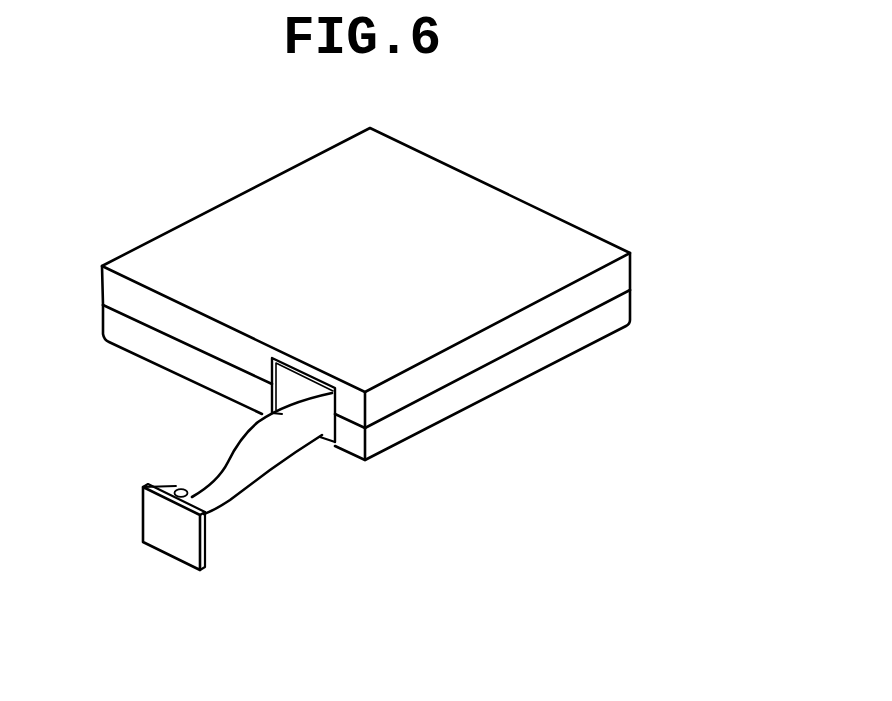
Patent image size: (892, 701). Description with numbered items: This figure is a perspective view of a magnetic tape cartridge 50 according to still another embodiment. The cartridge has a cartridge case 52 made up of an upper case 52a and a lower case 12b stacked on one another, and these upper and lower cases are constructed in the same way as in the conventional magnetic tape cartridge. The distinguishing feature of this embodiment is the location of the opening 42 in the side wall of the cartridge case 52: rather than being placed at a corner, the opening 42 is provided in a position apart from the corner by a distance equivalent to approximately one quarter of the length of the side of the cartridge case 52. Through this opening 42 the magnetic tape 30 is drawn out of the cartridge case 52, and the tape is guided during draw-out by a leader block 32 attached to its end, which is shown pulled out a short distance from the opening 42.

The magnetic tape cartridge 50 is at (538, 168).
The cartridge case 52 is at (733, 222).
The upper case 52a is at (307, 178).
The lower case 12b is at (622, 317).
The opening 42 is at (278, 418).
The magnetic tape 30 is at (258, 470).
The leader block 32 is at (148, 521).